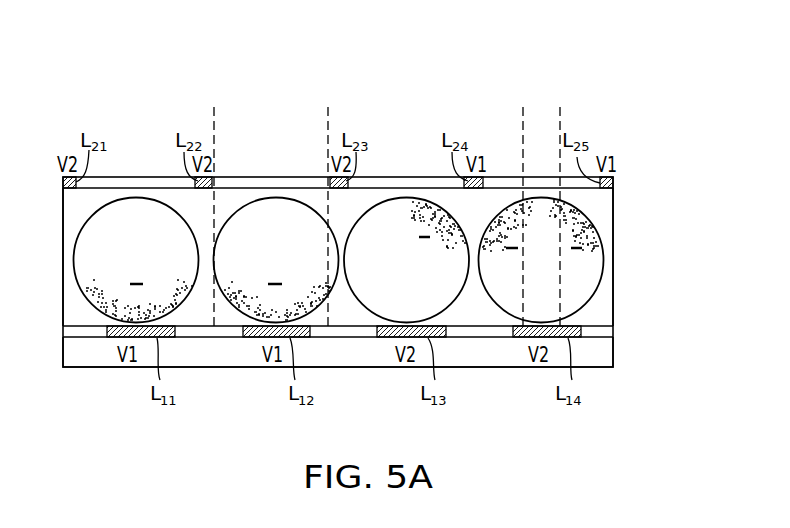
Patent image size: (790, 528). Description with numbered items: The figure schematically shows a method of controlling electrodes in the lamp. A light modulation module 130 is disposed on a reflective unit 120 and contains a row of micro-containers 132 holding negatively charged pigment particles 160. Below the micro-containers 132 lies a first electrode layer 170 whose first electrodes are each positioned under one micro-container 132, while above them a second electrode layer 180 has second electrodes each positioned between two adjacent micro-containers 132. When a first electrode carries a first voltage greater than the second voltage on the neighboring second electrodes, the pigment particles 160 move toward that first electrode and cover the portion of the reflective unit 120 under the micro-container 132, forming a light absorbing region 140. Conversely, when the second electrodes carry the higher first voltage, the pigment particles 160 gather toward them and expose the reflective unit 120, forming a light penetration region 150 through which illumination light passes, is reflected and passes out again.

The reflective unit 120 is at (606, 357).
The light modulation module 130 is at (607, 247).
The micro-container 132 is at (598, 291).
The light absorbing region 140 is at (327, 111).
The light penetration region 150 is at (559, 111).
The pigment particles 160 is at (591, 222).
The first electrode layer 170 is at (606, 333).
The second electrode layer 180 is at (609, 182).